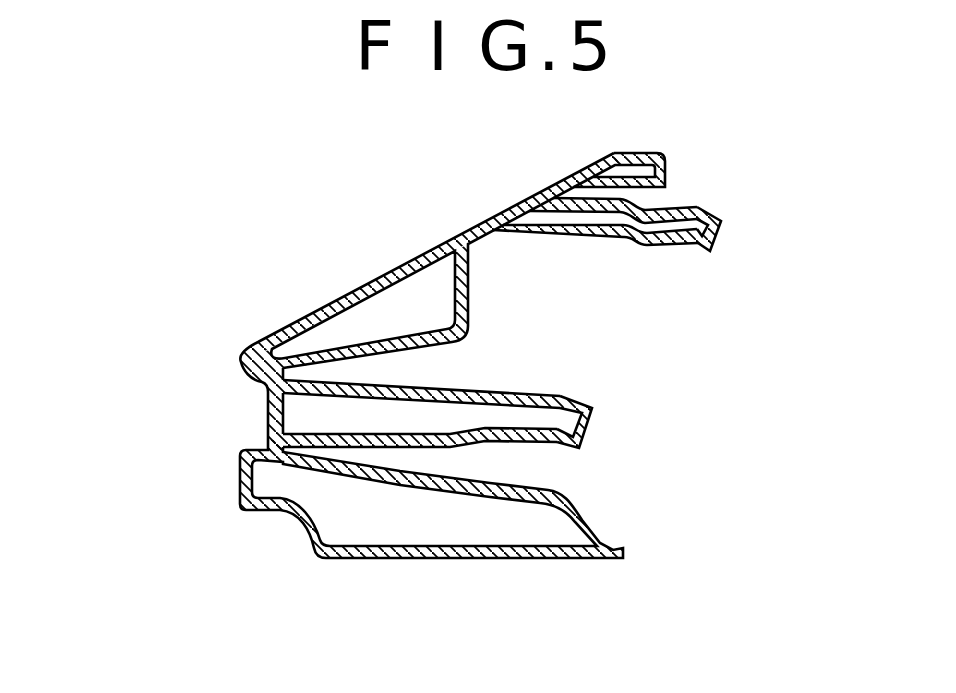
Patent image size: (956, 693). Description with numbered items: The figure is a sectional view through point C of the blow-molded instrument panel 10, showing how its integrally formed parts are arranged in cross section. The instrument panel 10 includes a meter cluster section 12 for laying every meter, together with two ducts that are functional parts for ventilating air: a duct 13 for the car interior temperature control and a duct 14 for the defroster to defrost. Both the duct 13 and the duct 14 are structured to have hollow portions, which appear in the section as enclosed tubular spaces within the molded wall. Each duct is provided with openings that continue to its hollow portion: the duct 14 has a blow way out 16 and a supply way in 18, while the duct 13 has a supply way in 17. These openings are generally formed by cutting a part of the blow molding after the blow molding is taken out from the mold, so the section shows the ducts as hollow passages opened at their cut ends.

The instrument panel 10 is at (206, 318).
The meter cluster section 12 is at (267, 423).
The duct 13 is at (422, 416).
The duct 14 is at (579, 219).
The blow way out 16 is at (517, 212).
The supply way in 17 is at (596, 425).
The supply way in 18 is at (722, 235).